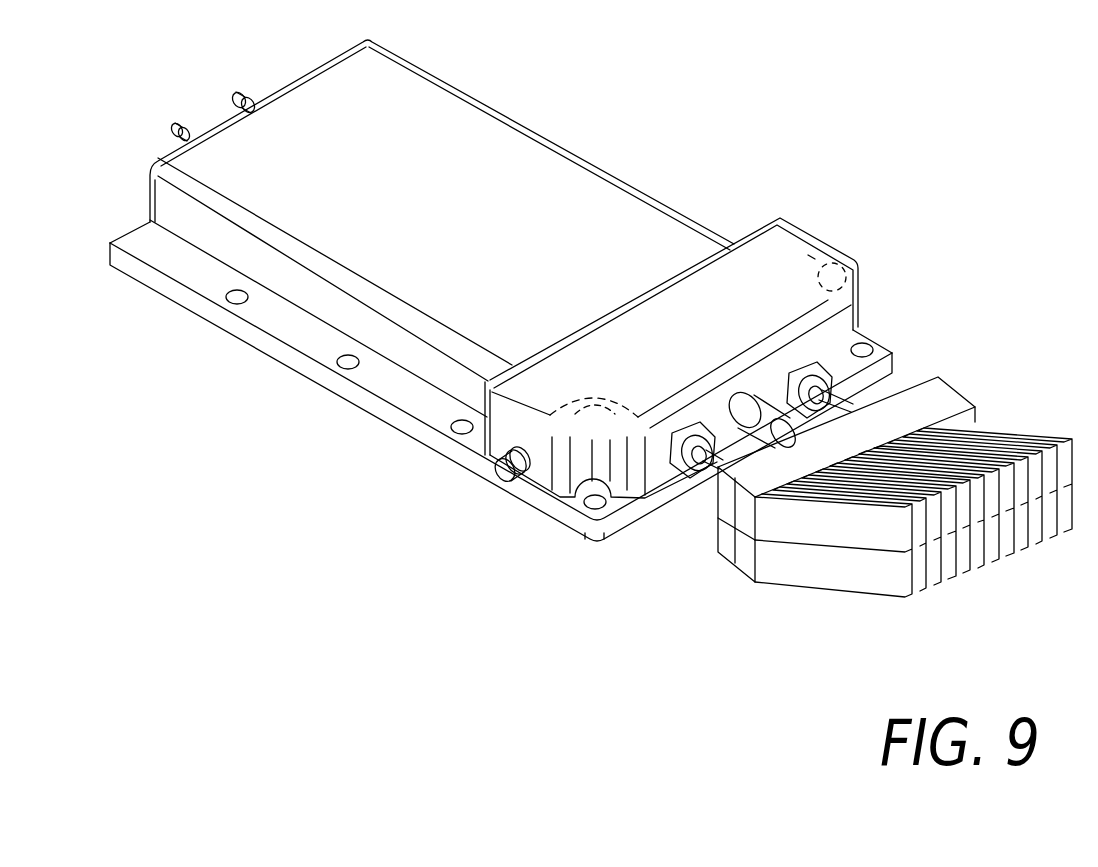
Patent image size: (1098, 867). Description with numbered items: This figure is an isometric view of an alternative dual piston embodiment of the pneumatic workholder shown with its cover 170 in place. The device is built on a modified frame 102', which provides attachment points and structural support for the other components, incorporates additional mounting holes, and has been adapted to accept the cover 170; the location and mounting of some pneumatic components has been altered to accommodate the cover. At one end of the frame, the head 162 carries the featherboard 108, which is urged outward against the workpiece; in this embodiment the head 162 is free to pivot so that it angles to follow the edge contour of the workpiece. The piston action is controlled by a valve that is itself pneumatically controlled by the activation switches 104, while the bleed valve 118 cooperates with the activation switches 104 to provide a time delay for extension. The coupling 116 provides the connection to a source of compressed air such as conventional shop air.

The modified frame 102' is at (501, 381).
The activation switches 104 is at (498, 489).
The featherboard 108 is at (775, 586).
The coupling 116 is at (230, 85).
The bleed valve 118 is at (171, 123).
The head 162 is at (723, 561).
The cover 170 is at (529, 120).